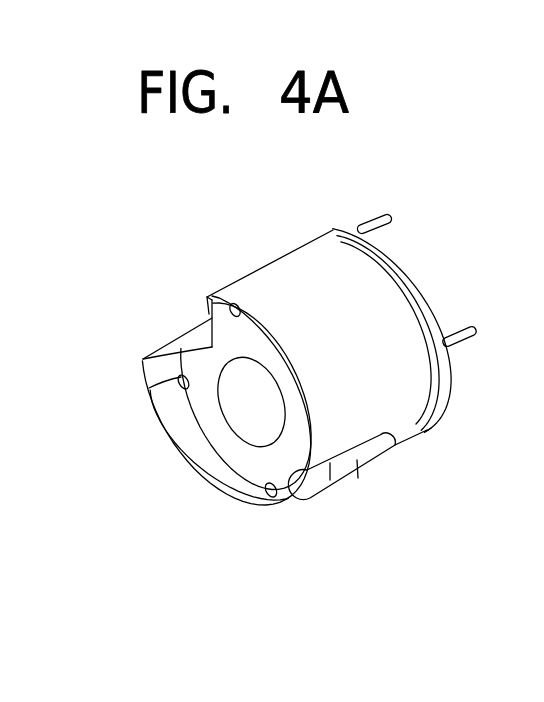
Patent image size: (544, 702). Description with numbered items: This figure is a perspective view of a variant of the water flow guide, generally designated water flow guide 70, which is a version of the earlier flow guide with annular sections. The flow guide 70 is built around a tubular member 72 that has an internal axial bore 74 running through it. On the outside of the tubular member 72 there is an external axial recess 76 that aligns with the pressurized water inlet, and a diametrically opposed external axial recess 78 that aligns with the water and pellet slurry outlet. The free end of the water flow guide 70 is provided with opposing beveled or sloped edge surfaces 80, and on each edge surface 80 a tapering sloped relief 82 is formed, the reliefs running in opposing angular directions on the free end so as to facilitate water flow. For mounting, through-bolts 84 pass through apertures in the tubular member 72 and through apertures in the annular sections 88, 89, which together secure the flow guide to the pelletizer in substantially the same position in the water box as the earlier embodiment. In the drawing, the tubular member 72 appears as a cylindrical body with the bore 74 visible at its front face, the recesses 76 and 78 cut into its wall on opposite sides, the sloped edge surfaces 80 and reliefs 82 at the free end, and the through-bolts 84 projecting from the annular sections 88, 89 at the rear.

The water flow guide 70 is at (208, 268).
The tubular member 72 is at (333, 230).
The internal axial bore 74 is at (237, 402).
The external axial recess 76 is at (358, 478).
The external axial recess 78 is at (190, 333).
The beveled edge surface 80 is at (293, 381).
The tapering sloped relief 82 is at (249, 307).
The through-bolt 84 is at (380, 217).
The annular section 88 is at (422, 428).
The annular section 89 is at (443, 402).